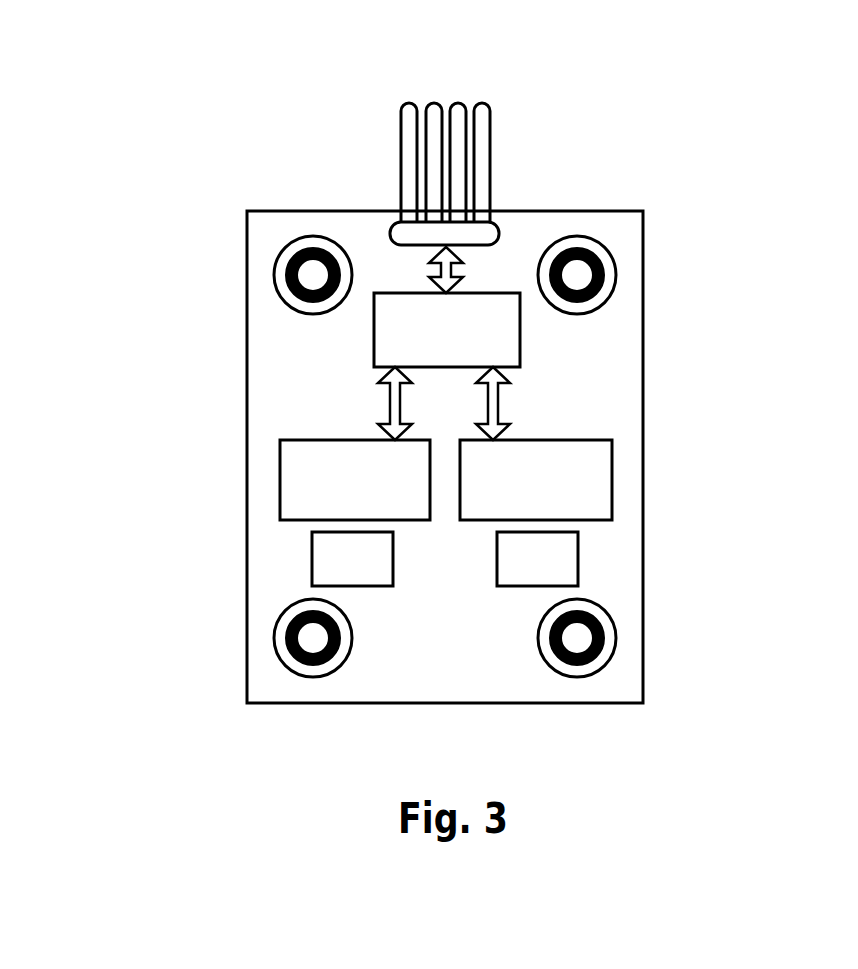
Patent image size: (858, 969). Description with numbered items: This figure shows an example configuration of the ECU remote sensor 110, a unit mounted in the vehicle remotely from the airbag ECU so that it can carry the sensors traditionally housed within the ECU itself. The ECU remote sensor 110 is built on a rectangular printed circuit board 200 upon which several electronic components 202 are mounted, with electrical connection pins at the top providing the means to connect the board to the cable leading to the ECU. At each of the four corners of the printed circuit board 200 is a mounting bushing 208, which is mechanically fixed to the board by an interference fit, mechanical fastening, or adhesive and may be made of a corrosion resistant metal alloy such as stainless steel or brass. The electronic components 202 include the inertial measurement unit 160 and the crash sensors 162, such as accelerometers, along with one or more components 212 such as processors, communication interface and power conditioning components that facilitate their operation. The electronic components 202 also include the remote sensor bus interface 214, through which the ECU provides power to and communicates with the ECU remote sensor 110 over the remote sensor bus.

The ECU remote sensor 110 is at (307, 91).
The printed circuit board 200 is at (408, 103).
The electronic components 202 is at (451, 416).
The mounting bushing 208 is at (302, 249).
The remote sensor bus interface 214 is at (374, 325).
The inertial measurement unit 160 is at (280, 477).
The crash sensors 162 is at (612, 477).
The components for facilitating operation 212 is at (312, 553).